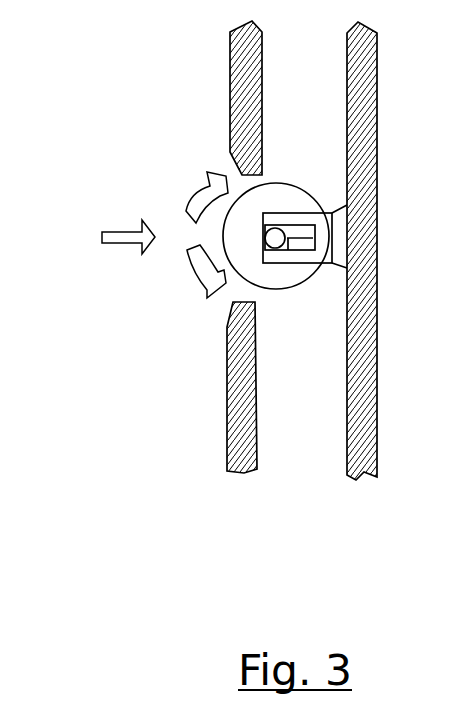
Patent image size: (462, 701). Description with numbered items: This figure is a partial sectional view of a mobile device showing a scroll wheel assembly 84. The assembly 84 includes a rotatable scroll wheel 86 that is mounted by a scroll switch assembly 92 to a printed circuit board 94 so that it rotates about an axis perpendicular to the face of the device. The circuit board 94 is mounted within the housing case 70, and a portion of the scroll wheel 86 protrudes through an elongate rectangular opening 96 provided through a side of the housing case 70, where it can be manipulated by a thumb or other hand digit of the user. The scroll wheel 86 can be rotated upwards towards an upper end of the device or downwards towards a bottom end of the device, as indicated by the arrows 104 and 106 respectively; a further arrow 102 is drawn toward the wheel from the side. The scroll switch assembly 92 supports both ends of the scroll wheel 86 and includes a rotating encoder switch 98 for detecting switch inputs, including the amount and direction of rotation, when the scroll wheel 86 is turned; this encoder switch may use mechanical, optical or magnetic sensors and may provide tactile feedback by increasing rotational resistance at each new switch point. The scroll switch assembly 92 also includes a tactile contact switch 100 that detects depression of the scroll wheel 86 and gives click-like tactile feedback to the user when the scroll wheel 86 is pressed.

The housing case 70 is at (229, 112).
The scroll wheel assembly 84 is at (118, 145).
The scroll wheel 86 is at (272, 181).
The scroll switch assembly 92 is at (335, 208).
The printed circuit board 94 is at (377, 58).
The elongate rectangular opening 96 is at (229, 304).
The rotating encoder switch 98 is at (280, 252).
The tactile contact switch 100 is at (305, 252).
The insertion direction 102 is at (125, 231).
The arrow 104 is at (188, 206).
The arrow 106 is at (191, 262).